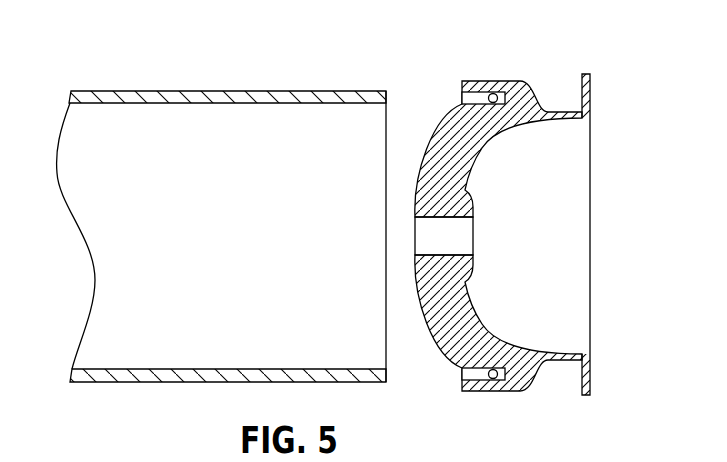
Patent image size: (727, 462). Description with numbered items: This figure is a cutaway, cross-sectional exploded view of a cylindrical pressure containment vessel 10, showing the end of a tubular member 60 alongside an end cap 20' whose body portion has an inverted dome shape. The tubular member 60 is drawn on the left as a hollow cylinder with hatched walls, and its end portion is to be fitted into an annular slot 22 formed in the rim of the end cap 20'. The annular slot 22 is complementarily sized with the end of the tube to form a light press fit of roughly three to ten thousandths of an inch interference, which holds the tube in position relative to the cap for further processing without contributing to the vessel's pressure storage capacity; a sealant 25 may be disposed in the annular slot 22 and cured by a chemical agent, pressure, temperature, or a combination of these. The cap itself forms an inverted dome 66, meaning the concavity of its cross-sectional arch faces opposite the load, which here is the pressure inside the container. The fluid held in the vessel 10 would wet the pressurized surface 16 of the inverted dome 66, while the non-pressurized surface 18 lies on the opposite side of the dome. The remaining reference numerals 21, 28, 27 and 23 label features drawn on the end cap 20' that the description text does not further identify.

The cylindrical pressure containment vessel 10 is at (213, 201).
The tubular member 60 is at (186, 84).
The pressurized surface 16 is at (418, 172).
The end cap 20' is at (531, 222).
The central band / seal member 21 is at (462, 239).
The sealant 25 is at (494, 90).
The groove 28 is at (486, 81).
The annular slot 22 is at (477, 376).
The inverted dome 66 is at (440, 171).
The non-pressurized surface 18 is at (462, 287).
The transition curve 27 is at (560, 360).
The flange plate 23 is at (591, 374).